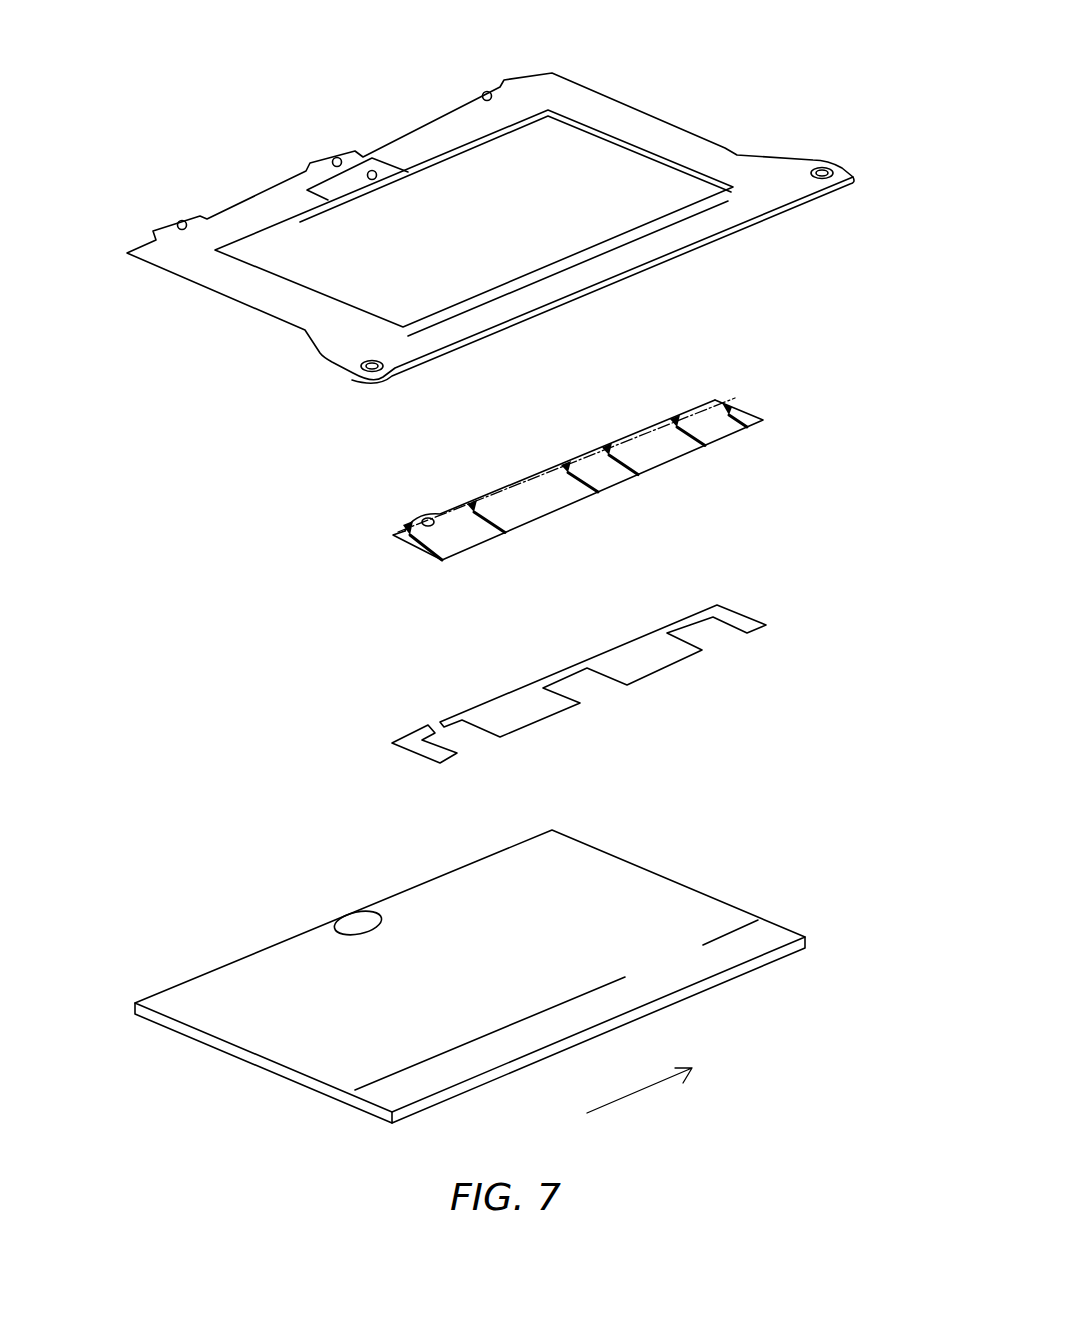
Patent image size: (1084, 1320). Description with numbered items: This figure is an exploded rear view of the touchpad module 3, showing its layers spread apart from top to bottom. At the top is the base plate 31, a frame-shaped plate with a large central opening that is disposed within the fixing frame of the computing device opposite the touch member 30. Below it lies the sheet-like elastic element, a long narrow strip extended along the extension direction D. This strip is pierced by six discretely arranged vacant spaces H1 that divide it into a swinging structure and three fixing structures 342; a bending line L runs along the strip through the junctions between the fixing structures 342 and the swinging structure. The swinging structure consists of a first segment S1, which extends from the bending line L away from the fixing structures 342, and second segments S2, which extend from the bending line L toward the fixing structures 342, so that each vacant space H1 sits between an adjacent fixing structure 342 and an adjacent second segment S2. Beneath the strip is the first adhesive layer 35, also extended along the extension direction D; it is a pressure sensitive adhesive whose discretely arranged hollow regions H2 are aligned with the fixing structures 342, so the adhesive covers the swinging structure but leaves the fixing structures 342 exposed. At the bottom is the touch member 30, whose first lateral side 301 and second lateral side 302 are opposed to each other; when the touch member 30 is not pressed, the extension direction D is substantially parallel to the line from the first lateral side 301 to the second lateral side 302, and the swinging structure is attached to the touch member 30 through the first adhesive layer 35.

The touchpad module 3 is at (872, 45).
The base plate 31 is at (645, 128).
The fixing structures 342 is at (576, 483).
The bending line L is at (693, 412).
The first segment S1 is at (497, 492).
The second segments S2 is at (441, 562).
The vacant spaces H1 is at (403, 524).
The first adhesive layer 35 is at (584, 678).
The hollow regions H2 is at (712, 638).
The touch member 30 is at (483, 991).
The first lateral side 301 is at (352, 1115).
The second lateral side 302 is at (762, 915).
The extension direction D is at (639, 1089).